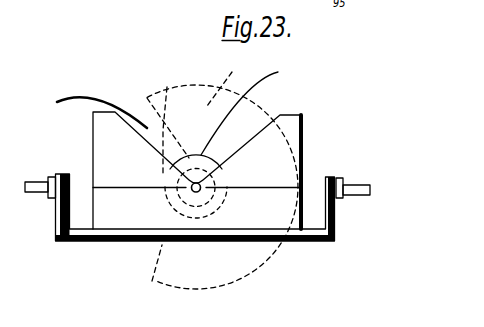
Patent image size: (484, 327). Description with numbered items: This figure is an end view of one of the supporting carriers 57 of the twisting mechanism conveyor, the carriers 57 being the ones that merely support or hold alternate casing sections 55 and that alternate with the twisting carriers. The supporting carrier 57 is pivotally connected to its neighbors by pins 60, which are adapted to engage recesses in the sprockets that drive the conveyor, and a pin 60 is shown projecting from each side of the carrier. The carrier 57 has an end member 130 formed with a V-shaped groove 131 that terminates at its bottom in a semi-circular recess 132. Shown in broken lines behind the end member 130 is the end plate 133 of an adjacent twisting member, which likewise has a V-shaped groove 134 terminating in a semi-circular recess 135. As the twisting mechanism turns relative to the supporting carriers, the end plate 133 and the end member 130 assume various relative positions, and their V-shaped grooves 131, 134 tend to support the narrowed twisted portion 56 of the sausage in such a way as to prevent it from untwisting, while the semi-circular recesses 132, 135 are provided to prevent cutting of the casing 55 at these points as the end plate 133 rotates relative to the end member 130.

The casing section 55 is at (230, 113).
The narrowed twisted portion 56 is at (208, 183).
The supporting carrier 57 is at (122, 232).
The pin 60 is at (36, 182).
The end member 130 is at (292, 142).
The V-shaped groove 131 is at (87, 112).
The semi-circular recess 132 is at (195, 195).
The end plate 133 is at (230, 80).
The V-shaped groove 134 is at (168, 86).
The semi-circular recess 135 is at (275, 104).